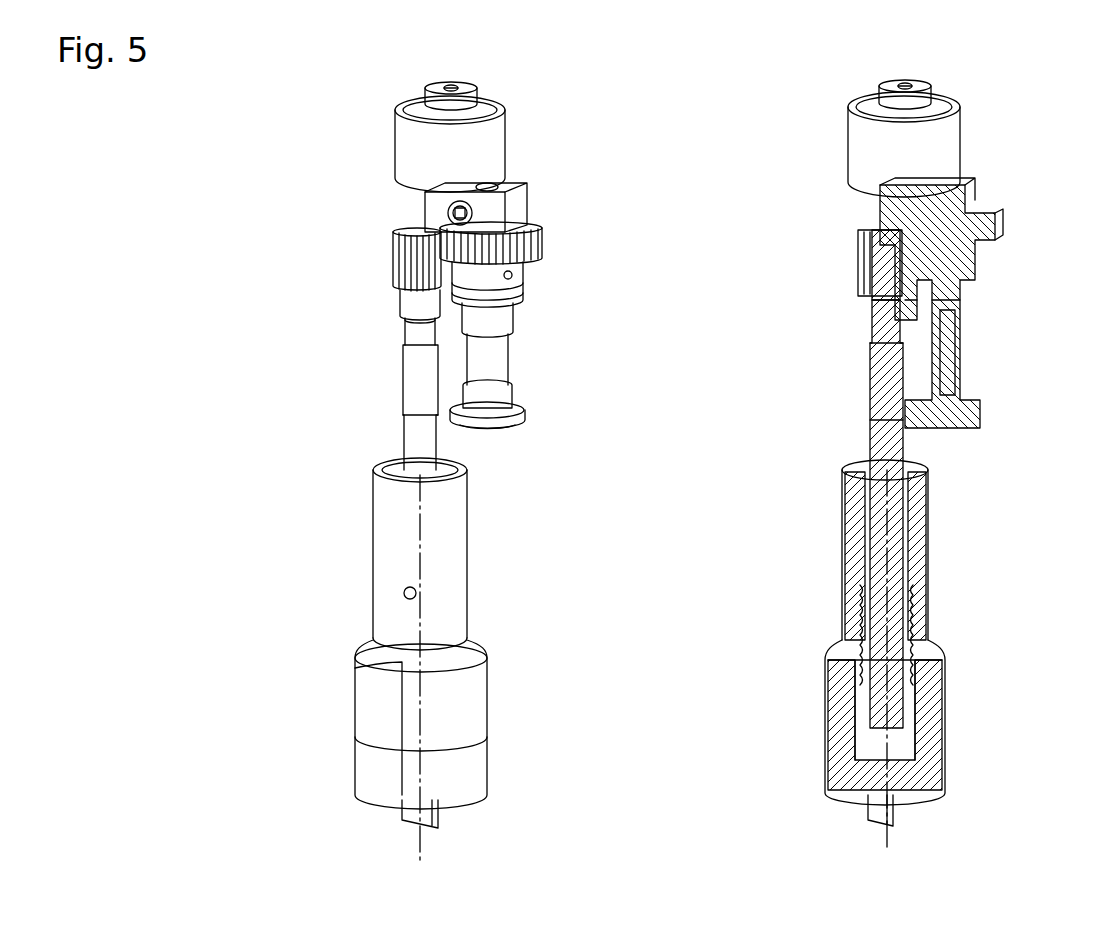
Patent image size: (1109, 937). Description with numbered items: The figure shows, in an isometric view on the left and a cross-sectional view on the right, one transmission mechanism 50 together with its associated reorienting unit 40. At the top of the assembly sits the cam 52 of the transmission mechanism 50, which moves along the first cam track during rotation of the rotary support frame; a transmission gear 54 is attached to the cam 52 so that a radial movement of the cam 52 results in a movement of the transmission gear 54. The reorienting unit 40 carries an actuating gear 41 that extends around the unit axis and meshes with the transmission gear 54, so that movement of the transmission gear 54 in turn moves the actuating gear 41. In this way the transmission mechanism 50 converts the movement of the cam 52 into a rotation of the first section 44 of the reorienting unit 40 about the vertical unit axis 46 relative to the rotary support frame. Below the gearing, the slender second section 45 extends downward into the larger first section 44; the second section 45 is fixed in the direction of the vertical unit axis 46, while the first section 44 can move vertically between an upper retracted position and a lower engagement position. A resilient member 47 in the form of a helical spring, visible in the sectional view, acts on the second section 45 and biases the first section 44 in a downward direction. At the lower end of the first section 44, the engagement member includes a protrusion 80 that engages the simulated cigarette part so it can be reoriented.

The reorienting unit 40 is at (318, 540).
The actuating gear 41 is at (395, 252).
The first section 44 is at (392, 573).
The second section 45 is at (415, 385).
The vertical unit axis 46 is at (422, 842).
The resilient member 47 is at (925, 605).
The transmission mechanism 50 is at (535, 140).
The cam 52 is at (418, 150).
The transmission gear 54 is at (540, 232).
The protrusion 80 is at (403, 810).